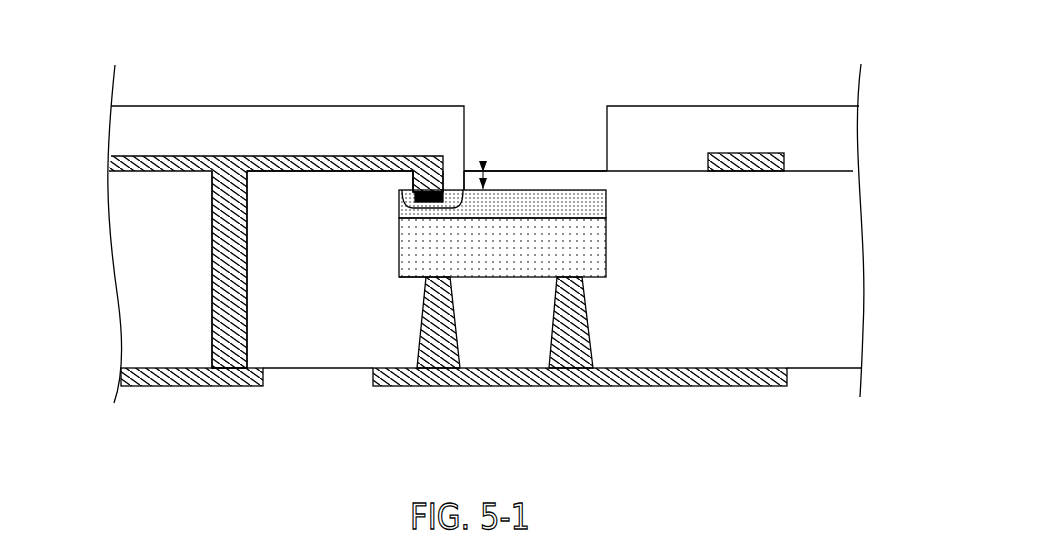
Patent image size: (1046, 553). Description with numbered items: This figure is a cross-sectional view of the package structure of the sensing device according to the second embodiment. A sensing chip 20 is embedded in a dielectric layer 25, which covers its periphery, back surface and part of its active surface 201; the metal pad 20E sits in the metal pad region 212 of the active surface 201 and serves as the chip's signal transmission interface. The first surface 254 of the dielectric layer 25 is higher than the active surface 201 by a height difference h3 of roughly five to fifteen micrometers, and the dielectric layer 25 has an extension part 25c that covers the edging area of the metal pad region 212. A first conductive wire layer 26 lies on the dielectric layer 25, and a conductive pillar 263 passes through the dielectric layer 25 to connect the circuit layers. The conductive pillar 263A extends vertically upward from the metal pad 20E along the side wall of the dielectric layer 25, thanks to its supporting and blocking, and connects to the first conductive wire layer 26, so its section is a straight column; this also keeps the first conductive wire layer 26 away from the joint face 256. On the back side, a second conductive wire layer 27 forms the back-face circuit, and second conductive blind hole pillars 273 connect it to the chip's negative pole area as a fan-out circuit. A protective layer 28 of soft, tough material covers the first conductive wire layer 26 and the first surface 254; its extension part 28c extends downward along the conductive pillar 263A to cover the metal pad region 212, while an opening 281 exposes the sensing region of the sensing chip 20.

The sensing chip 20 is at (503, 177).
The metal pad 20E is at (428, 192).
The active surface 201 is at (574, 192).
The metal pad region 212 is at (502, 247).
The dielectric layer 25 is at (116, 268).
The extension part of the dielectric layer 25c is at (400, 180).
The first surface of the dielectric layer 254 is at (279, 172).
The joint face 256 is at (400, 281).
The first conductive wire layer 26 is at (106, 163).
The conductive pillar 263 is at (212, 275).
The conductive pillar 263A is at (414, 191).
The second conductive wire layer 27 is at (117, 376).
The second conductive blind hole pillar 273 is at (455, 325).
The protective layer 28 is at (106, 124).
The extension part of the protective layer 28c is at (453, 170).
The opening 281 is at (566, 138).
The height difference h3 is at (505, 174).